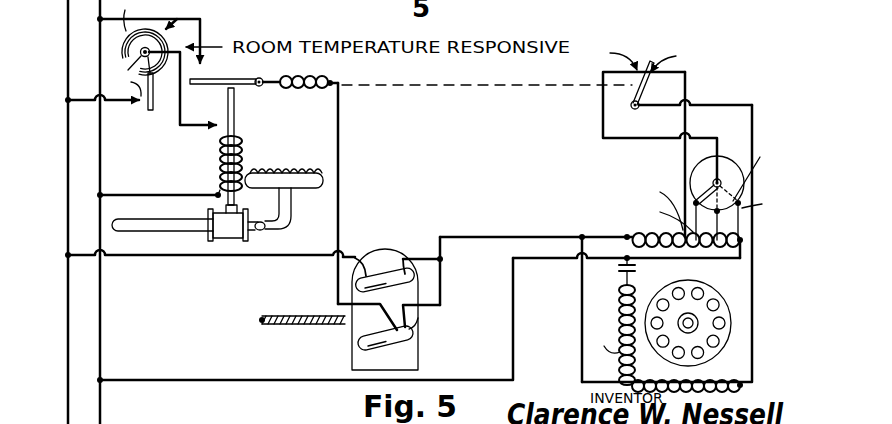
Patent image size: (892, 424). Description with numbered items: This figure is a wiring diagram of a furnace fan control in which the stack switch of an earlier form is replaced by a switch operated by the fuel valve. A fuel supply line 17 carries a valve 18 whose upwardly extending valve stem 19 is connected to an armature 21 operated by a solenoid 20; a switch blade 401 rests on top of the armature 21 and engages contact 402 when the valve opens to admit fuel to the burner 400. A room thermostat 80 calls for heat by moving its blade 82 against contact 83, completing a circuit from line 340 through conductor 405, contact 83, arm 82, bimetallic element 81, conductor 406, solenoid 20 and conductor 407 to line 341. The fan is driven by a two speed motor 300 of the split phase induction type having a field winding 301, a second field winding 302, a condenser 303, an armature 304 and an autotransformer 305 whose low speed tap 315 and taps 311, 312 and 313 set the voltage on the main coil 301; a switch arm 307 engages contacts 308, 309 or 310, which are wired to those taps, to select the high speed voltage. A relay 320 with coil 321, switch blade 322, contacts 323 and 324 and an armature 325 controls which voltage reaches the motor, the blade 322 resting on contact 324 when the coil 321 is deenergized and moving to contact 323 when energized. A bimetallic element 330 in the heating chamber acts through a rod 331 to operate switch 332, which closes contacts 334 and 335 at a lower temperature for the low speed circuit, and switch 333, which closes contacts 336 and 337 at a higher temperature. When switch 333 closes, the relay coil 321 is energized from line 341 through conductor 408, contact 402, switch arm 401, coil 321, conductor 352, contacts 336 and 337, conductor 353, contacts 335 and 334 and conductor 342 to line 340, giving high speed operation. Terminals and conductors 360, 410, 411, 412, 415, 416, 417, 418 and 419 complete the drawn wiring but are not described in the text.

The fuel supply line 17 is at (161, 232).
The valve 18 is at (214, 240).
The valve stem 19 is at (216, 205).
The solenoid 20 is at (239, 140).
The armature 21 is at (237, 107).
The room thermostat 80 is at (173, 15).
The bimetallic element 81 is at (125, 15).
The blade 82 is at (162, 86).
The contact 83 is at (125, 85).
The two speed motor 300 is at (787, 323).
The field winding 301 is at (740, 387).
The second field winding 302 is at (604, 340).
The condenser 303 is at (619, 279).
The armature 304 is at (728, 268).
The autotransformer 305 is at (649, 226).
The switch arm 307 is at (714, 176).
The contact 308 is at (690, 200).
The contact 309 is at (760, 172).
The contact 310 is at (740, 202).
The tap 311 is at (767, 206).
The tap 312 is at (735, 225).
The tap 313 is at (744, 241).
The low speed tap 315 is at (662, 214).
The relay 320 is at (402, 78).
The coil 321 is at (312, 77).
The switch blade 322 is at (643, 62).
The contact 323 is at (607, 61).
The contact 324 is at (672, 56).
The armature 325 is at (476, 84).
The bimetallic element 330 is at (285, 327).
The rod 331 is at (262, 318).
The switch 332 is at (362, 258).
The switch 333 is at (401, 346).
The contact 334 is at (395, 268).
The contact 335 is at (404, 257).
The contact 336 is at (387, 320).
The contact 337 is at (418, 320).
The line 340 is at (68, 201).
The line 341 is at (100, 162).
The conductor 342 is at (299, 254).
The conductor 352 is at (339, 167).
The conductor 353 is at (441, 290).
The tap conductor 360 is at (655, 203).
The burner 400 is at (264, 168).
The switch blade 401 is at (208, 80).
The contact 402 is at (212, 45).
The conductor 405 is at (115, 104).
The conductor 406 is at (183, 88).
The conductor 407 is at (178, 192).
The conductor 408 is at (190, 18).
The conductor 410 is at (278, 378).
The conductor 411 is at (580, 313).
The conductor 412 is at (515, 236).
The condenser 415 is at (637, 268).
The conductor 416 is at (582, 234).
The conductor 417 is at (685, 122).
The conductor 418 is at (735, 103).
The conductor 419 is at (603, 122).